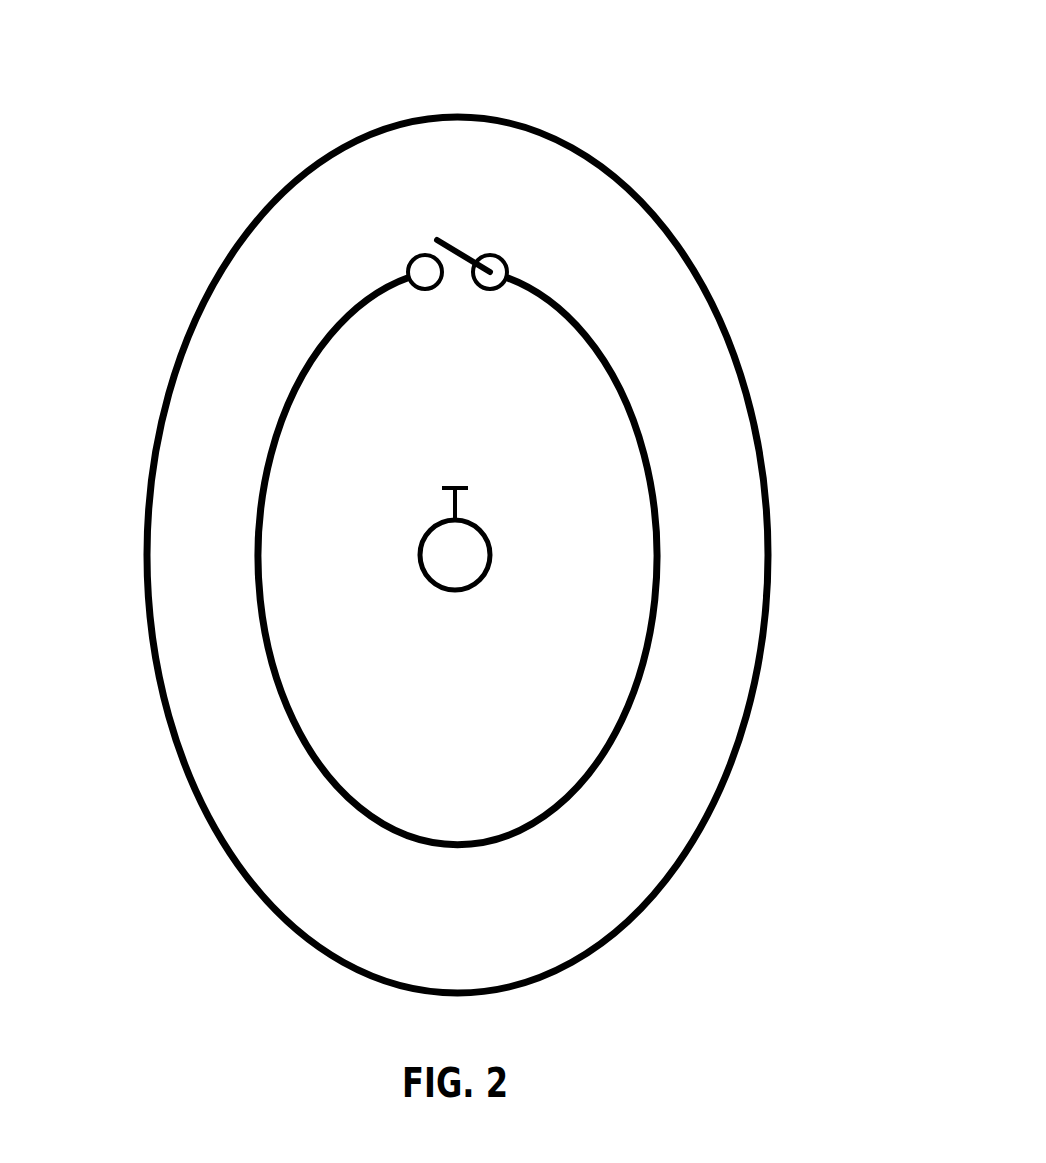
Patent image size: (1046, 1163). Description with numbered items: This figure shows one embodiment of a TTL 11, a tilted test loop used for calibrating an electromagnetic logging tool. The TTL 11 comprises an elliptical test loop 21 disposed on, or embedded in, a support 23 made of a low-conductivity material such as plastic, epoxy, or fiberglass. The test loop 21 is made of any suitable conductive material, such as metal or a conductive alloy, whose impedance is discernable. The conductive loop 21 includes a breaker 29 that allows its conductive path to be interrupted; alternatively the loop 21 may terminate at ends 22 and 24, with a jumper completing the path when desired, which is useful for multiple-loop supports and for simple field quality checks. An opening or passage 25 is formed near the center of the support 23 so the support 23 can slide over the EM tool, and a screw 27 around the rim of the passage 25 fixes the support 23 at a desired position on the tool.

The TTL 11 is at (655, 123).
The test loop 21 is at (653, 642).
The end 22 is at (507, 255).
The support 23 is at (733, 335).
The end 24 is at (422, 255).
The passage 25 is at (420, 553).
The screw 27 is at (455, 486).
The breaker 29 is at (465, 252).